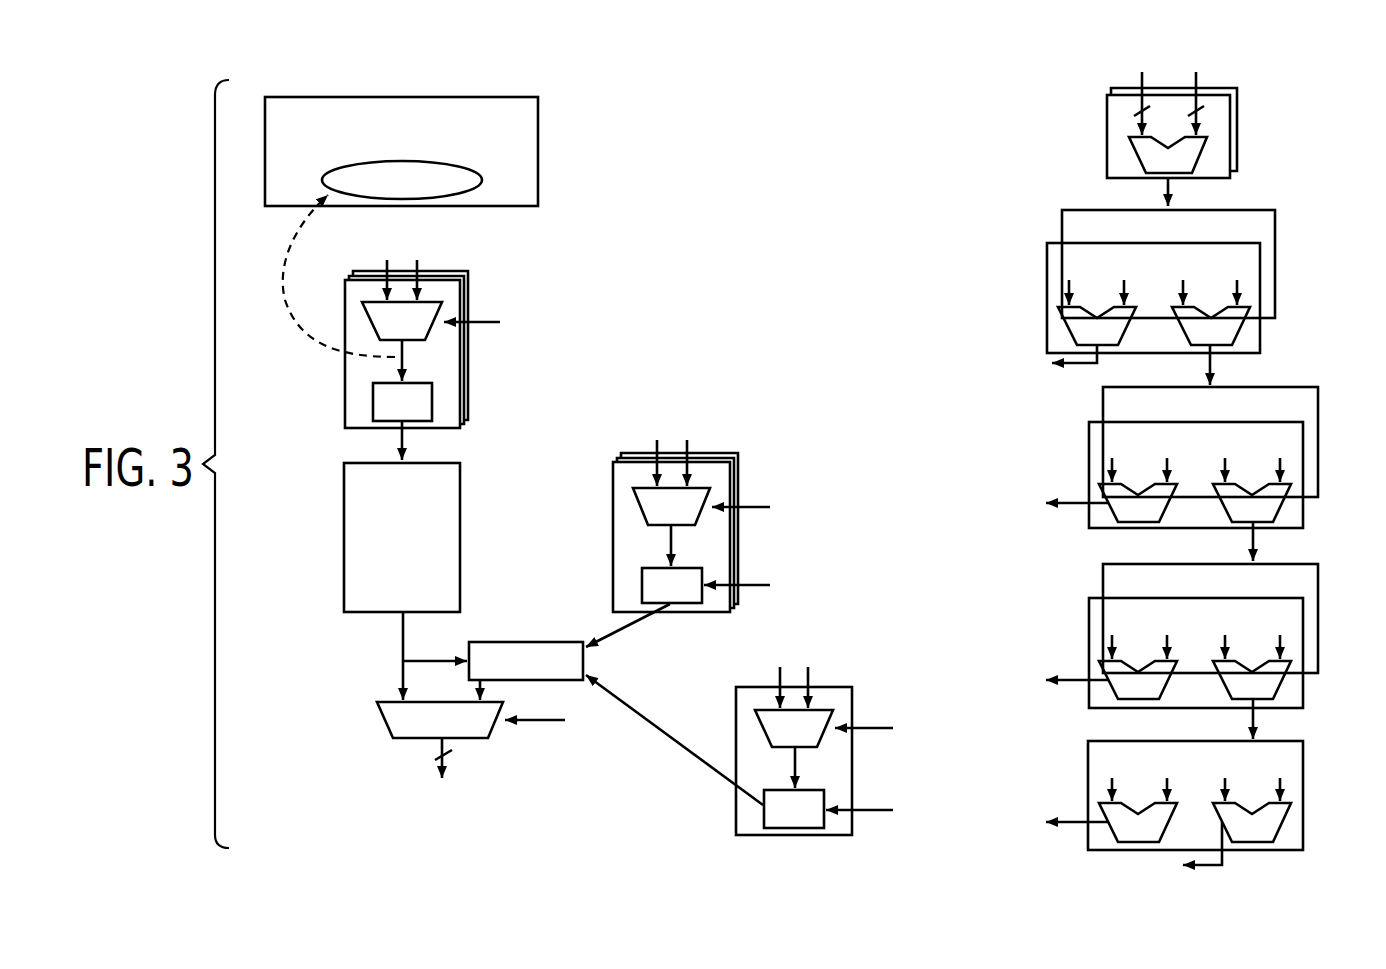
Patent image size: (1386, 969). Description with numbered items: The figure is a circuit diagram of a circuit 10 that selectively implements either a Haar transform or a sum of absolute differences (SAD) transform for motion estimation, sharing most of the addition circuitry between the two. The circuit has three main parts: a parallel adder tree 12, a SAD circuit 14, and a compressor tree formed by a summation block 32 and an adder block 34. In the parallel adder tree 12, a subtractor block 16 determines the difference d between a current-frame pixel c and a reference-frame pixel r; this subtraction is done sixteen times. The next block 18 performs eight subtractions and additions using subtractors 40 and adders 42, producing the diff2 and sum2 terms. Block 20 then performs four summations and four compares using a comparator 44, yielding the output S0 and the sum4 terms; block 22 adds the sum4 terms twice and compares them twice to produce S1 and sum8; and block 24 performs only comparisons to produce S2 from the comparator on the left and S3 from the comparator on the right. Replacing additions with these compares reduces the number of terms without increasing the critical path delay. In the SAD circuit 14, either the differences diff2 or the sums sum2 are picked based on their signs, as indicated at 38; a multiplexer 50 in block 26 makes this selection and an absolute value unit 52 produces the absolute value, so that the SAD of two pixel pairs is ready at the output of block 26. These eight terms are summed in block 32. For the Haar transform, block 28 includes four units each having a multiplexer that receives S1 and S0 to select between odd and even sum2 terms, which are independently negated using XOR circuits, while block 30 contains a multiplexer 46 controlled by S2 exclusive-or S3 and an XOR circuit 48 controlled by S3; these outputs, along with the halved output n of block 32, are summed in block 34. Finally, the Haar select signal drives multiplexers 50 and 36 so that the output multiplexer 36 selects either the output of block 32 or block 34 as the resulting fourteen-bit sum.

The circuit 10 is at (358, 822).
The parallel adder tree 12 is at (1325, 148).
The SAD circuit 14 is at (613, 130).
The subtractor block 16 is at (1237, 130).
The subtraction and addition block 18 is at (1275, 290).
The summation and compare block 20 is at (1303, 475).
The second summation and compare block 22 is at (1303, 650).
The comparison block 24 is at (1303, 795).
The SAD output block 26 is at (466, 360).
The multiplexer and XOR block 28 is at (613, 537).
The multiplexer and XOR block 30 is at (852, 698).
The compressor tree block 32 is at (344, 540).
The compressor tree adder block 34 is at (525, 642).
The output multiplexer 36 is at (385, 718).
The sign-based selection 38 is at (538, 150).
The subtractor 40 is at (1068, 325).
The adder 42 is at (1243, 325).
The comparator 44 is at (1110, 520).
The multiplexer 46 is at (822, 740).
The XOR circuit 48 is at (764, 814).
The multiplexer 50 is at (362, 320).
The absolute value unit 52 is at (373, 400).